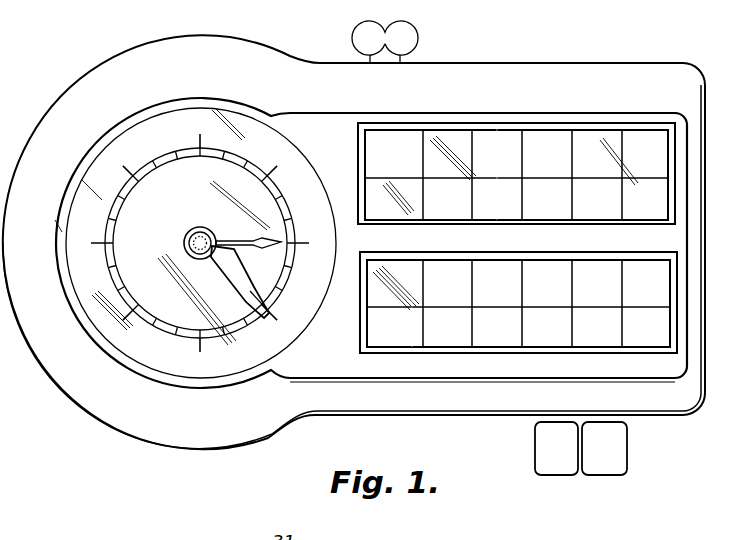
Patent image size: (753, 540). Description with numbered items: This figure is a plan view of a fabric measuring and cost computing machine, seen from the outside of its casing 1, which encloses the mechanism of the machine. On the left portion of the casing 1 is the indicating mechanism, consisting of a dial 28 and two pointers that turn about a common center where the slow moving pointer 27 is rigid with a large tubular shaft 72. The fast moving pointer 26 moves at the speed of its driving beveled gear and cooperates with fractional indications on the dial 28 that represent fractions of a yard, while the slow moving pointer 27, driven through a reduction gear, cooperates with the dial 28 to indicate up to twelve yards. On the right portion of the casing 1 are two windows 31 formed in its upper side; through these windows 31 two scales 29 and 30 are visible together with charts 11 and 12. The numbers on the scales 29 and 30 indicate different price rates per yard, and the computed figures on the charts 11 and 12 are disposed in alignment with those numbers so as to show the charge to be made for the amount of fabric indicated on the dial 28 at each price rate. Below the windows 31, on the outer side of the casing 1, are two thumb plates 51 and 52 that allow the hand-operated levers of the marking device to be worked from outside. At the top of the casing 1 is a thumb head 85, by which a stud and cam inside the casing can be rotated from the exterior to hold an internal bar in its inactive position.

The casing 1 is at (470, 78).
The chart 11 is at (655, 200).
The chart 12 is at (657, 330).
The fast moving pointer 26 is at (260, 290).
The slow moving pointer 27 is at (235, 244).
The dial 28 is at (281, 200).
The scale 29 is at (637, 143).
The scale 30 is at (657, 268).
The windows 31 is at (497, 126).
The thumb plate 51 is at (533, 450).
The thumb plate 52 is at (628, 450).
The tubular shaft 72 is at (184, 244).
The thumb head 85 is at (353, 37).